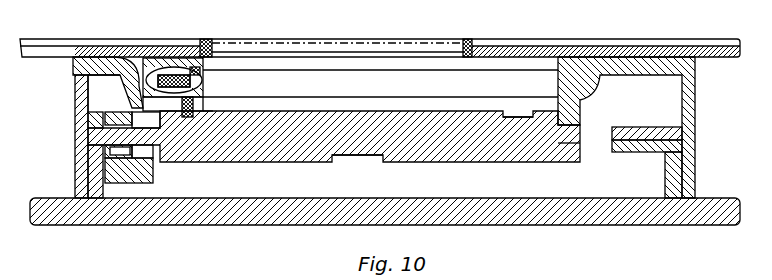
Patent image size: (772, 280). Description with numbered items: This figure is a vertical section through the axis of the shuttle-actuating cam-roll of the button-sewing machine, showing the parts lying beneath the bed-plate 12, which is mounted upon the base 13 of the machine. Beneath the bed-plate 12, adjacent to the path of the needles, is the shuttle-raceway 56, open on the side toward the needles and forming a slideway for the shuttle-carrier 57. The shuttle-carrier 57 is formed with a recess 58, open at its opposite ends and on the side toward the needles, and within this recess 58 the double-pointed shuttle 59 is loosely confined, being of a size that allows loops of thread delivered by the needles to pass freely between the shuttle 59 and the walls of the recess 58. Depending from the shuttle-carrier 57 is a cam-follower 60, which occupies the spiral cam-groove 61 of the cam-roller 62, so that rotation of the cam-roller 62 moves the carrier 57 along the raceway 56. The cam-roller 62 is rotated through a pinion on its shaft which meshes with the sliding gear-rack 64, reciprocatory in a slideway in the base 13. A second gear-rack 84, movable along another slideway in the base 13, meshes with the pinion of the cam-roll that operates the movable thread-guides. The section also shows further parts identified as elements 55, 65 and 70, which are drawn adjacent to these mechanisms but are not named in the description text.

The bed-plate 12 is at (147, 39).
The base 13 is at (80, 90).
The block 55 is at (155, 180).
The shuttle-raceway 56 is at (405, 78).
The shuttle-carrier 57 is at (205, 97).
The recess 58 is at (158, 71).
The double-pointed shuttle 59 is at (203, 80).
The cam-follower 60 is at (182, 115).
The spiral cam-groove 61 is at (205, 113).
The cam-roller 62 is at (285, 158).
The sliding gear-rack 64 is at (110, 162).
The upper member 65 is at (110, 116).
The bar 70 is at (347, 43).
The gear-rack 84 is at (680, 126).